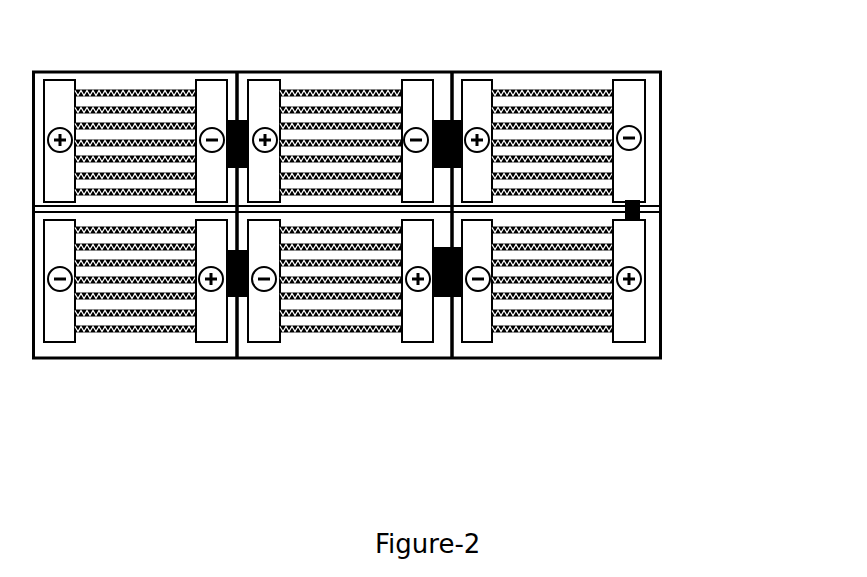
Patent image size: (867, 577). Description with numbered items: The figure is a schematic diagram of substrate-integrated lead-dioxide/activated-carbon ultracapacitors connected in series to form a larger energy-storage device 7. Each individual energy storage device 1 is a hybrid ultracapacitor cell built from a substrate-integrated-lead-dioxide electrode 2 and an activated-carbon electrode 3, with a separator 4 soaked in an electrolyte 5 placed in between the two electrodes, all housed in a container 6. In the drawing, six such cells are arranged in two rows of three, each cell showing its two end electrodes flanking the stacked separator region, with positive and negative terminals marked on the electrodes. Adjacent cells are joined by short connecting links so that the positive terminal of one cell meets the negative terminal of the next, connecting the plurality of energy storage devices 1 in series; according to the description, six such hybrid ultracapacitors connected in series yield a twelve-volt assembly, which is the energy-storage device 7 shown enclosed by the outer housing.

The energy storage device 1 is at (605, 82).
The substrate-integrated-lead-dioxide electrode 2 is at (614, 92).
The activated-carbon electrode 3 is at (645, 113).
The separator 4 is at (641, 148).
The electrolyte 5 is at (661, 175).
The container 6 is at (640, 211).
The energy-storage device 7 is at (640, 247).